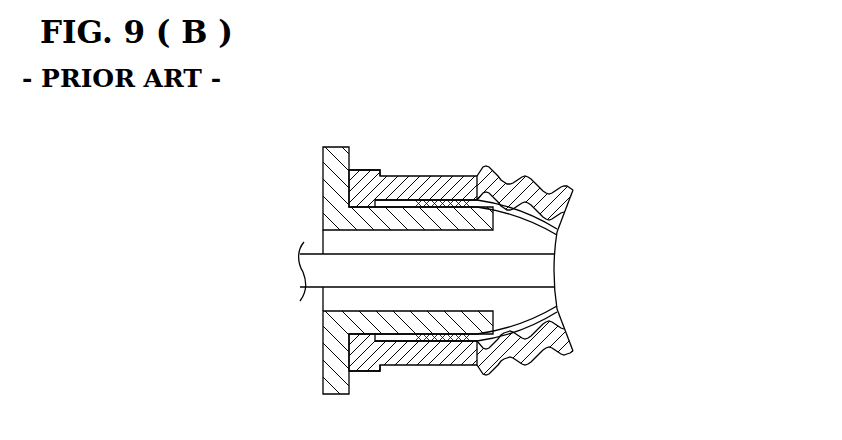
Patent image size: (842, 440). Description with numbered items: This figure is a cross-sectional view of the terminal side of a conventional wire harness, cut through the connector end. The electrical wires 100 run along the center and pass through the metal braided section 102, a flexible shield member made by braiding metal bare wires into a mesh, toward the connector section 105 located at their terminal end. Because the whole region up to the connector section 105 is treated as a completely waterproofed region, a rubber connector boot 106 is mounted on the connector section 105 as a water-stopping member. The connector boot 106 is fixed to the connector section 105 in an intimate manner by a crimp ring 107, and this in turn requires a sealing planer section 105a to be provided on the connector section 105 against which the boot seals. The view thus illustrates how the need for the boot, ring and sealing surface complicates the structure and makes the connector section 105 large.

The electrical wires 100 is at (540, 268).
The metal braided section 102 is at (437, 195).
The connector section 105 is at (320, 207).
The sealing planer section 105a is at (363, 212).
The connector boot 106 is at (490, 170).
The crimp ring 107 is at (365, 170).